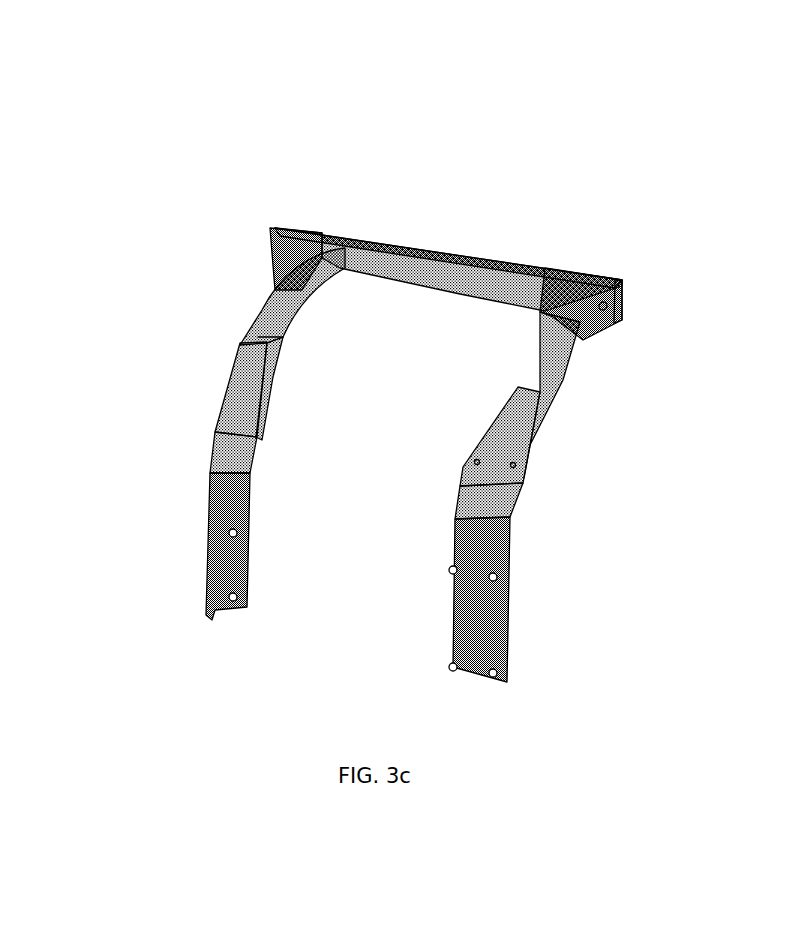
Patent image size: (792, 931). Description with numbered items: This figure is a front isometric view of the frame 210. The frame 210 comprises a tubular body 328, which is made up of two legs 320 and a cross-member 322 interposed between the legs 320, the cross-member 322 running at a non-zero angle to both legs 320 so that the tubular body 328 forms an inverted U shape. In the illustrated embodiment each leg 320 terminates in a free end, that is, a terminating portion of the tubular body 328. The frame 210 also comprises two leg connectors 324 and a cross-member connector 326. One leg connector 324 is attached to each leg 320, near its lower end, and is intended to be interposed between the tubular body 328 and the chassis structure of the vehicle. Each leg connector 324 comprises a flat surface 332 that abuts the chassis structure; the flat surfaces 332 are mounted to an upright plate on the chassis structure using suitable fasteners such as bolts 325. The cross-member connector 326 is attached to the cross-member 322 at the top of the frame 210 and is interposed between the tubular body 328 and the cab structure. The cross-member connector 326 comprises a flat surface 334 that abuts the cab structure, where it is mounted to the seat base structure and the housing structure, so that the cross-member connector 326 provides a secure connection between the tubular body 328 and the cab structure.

The frame 210 is at (250, 110).
The cross-member 322 is at (412, 270).
The flat surface 334 is at (565, 273).
The cross-member connector 326 is at (632, 298).
The tubular body 328 is at (250, 315).
The bolts 325 is at (232, 545).
The leg 320 is at (545, 407).
The leg connector 324 is at (495, 502).
The flat surface 332 is at (480, 612).